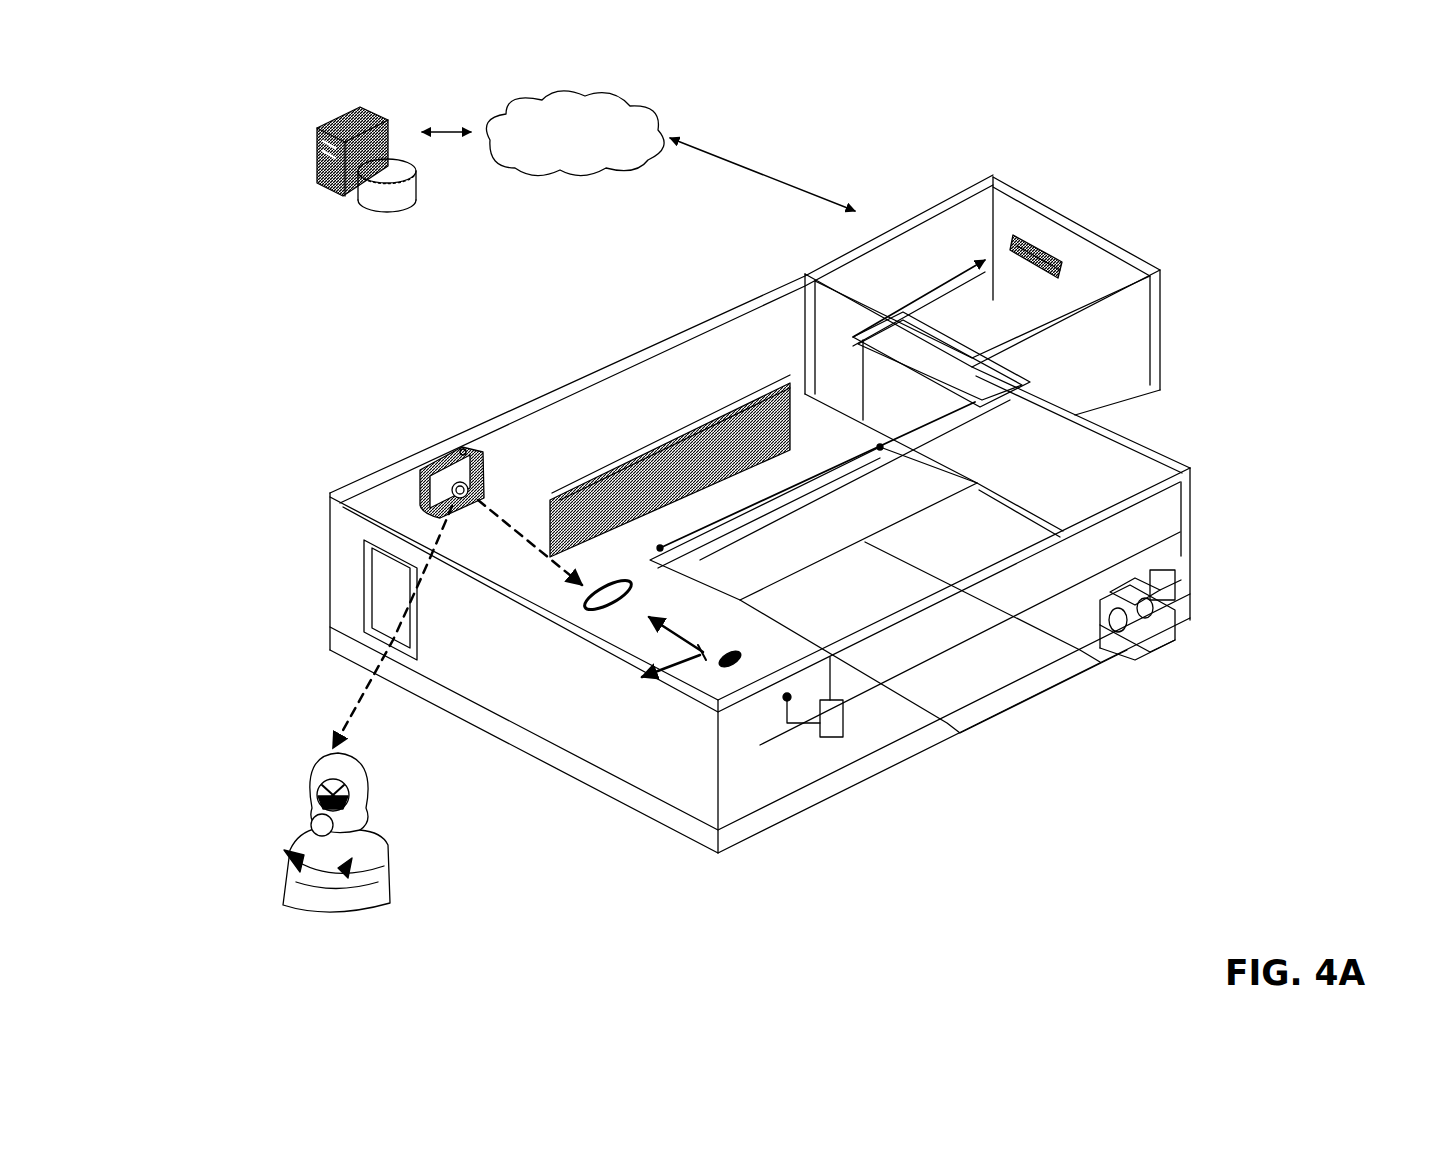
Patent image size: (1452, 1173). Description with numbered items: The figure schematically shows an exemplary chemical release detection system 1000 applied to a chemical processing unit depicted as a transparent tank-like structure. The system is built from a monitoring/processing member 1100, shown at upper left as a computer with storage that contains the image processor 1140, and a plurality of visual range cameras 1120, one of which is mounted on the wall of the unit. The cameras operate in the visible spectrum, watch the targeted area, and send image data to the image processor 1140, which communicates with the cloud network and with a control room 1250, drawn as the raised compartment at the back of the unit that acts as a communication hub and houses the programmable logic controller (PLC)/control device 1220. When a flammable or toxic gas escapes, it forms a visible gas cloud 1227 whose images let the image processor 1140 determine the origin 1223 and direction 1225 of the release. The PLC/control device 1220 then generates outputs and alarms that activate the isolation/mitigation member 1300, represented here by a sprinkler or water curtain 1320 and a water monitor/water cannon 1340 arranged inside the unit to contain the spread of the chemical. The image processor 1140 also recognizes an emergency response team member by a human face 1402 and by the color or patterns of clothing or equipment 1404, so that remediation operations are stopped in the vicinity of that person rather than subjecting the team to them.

The chemical release detection system 1000 is at (1331, 95).
The monitoring/processing member 1100 is at (314, 168).
The image processor 1140 is at (311, 129).
The visual range cameras 1120 is at (354, 512).
The programmable logic controller (PLC)/control device 1220 is at (1087, 226).
The origin of the release 1223 is at (570, 722).
The direction of the release 1225 is at (628, 757).
The gas cloud 1227 is at (521, 672).
The control room 1250 is at (982, 307).
The isolation/mitigation member 1300 is at (783, 544).
The sprinkler or water curtain 1320 is at (670, 417).
The water monitor/water cannon 1340 is at (992, 500).
The human face 1402 is at (265, 813).
The clothing or equipment 1404 is at (276, 855).